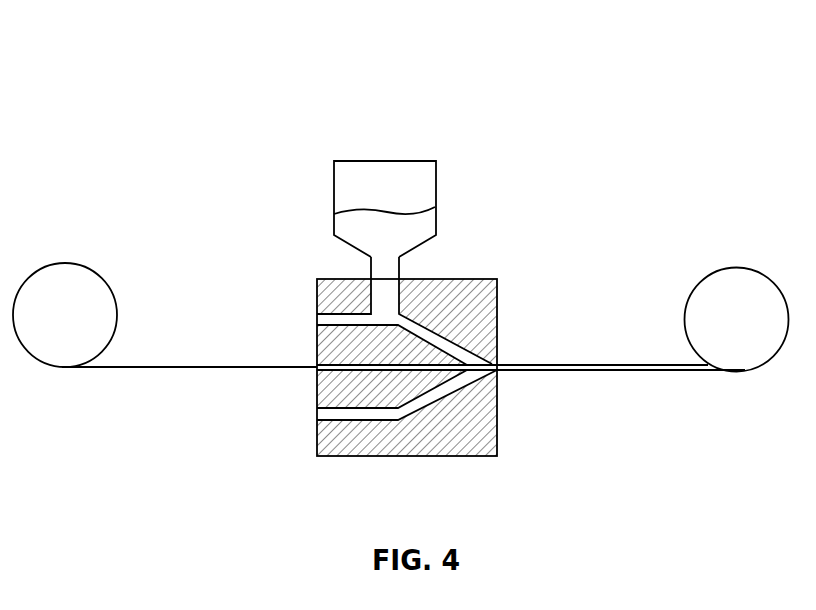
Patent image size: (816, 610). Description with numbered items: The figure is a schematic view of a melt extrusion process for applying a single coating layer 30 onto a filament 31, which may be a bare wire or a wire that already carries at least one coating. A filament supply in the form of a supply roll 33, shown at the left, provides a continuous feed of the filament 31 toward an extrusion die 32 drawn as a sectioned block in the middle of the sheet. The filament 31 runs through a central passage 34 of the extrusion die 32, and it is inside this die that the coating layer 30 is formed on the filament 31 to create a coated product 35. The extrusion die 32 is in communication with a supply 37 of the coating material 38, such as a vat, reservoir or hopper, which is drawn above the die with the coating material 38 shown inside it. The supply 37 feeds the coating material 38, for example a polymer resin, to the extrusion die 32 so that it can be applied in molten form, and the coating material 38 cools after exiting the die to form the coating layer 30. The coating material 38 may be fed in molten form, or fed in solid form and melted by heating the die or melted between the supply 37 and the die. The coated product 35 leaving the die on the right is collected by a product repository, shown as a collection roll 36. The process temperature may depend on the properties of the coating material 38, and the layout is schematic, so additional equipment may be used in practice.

The coating layer 30 is at (590, 373).
The filament 31 is at (199, 365).
The extrusion die 32 is at (478, 282).
The supply roll 33 is at (74, 278).
The central passage 34 is at (320, 371).
The coated product 35 is at (631, 362).
The collection roll 36 is at (724, 295).
The supply 37 is at (418, 173).
The coating material 38 is at (427, 222).